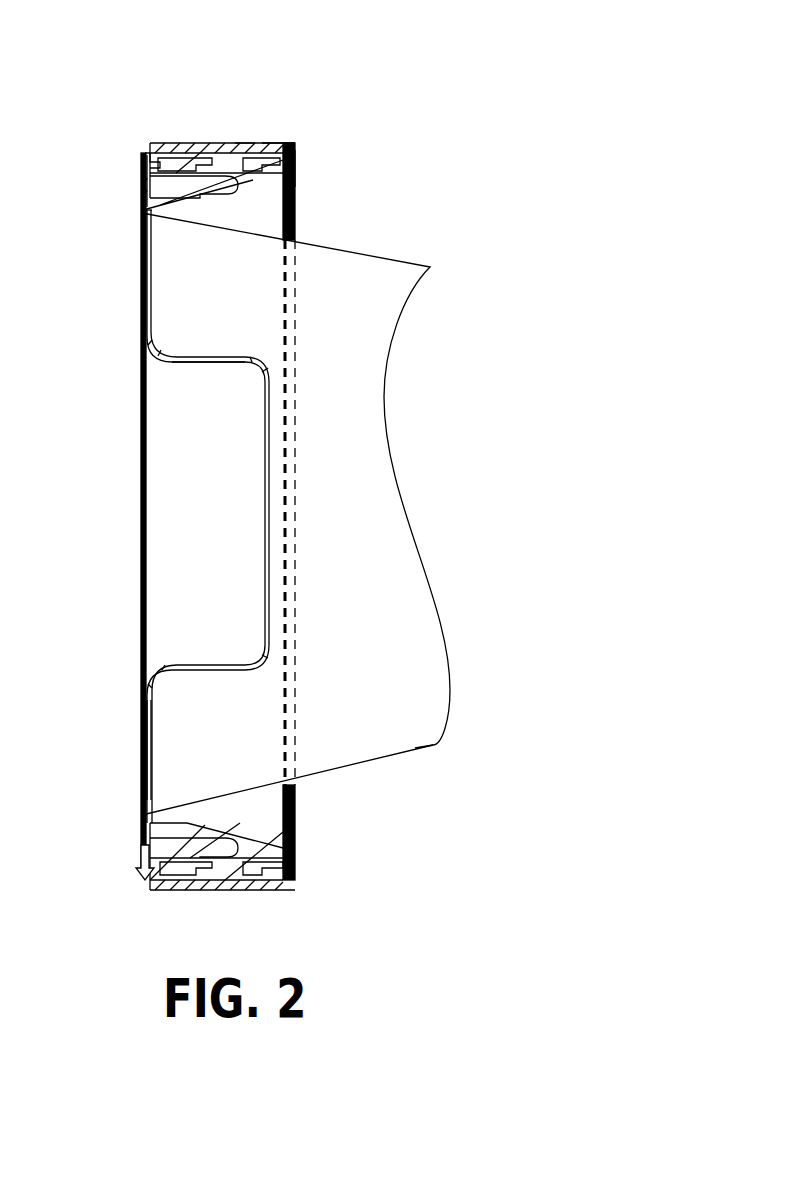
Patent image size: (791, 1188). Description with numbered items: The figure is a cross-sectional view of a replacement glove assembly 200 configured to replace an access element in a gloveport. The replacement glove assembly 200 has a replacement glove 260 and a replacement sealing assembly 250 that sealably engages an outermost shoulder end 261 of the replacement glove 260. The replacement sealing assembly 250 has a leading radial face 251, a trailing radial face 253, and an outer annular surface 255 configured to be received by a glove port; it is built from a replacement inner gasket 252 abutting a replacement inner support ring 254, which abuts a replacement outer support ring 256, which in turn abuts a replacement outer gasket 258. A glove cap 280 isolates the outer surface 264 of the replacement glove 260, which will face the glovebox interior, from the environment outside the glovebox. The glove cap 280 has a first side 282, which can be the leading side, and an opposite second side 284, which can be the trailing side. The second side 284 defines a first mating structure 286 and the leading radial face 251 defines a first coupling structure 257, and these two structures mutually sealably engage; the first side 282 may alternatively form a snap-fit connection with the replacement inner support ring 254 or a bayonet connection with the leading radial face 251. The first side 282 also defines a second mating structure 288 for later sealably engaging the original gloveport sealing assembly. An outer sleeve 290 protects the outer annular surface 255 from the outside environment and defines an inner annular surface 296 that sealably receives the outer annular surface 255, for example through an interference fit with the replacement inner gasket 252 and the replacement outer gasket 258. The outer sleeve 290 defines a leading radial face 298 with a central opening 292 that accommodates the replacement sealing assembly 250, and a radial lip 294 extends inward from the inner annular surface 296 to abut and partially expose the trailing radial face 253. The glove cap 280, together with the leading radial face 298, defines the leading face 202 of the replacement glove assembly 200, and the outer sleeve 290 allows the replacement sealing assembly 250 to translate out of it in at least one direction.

The replacement glove assembly 200 is at (264, 50).
The leading face 202 is at (98, 460).
The replacement sealing assembly 250 is at (220, 218).
The leading radial face 251 is at (120, 155).
The replacement inner gasket 252 is at (150, 143).
The trailing radial face 253 is at (304, 150).
The replacement inner support ring 254 is at (190, 143).
The outer annular surface 255 is at (248, 133).
The replacement outer support ring 256 is at (232, 190).
The first coupling structure 257 is at (160, 143).
The replacement outer gasket 258 is at (282, 143).
The replacement glove 260 is at (388, 258).
The outermost shoulder end 261 is at (232, 893).
The outer surface 264 is at (413, 738).
The glove cap 280 is at (185, 358).
The first side 282 is at (142, 757).
The second side 284 is at (152, 778).
The first mating structure 286 is at (145, 178).
The second mating structure 288 is at (145, 210).
The outer sleeve 290 is at (280, 892).
The opening 292 is at (282, 803).
The radial lip 294 is at (290, 870).
The inner annular surface 296 is at (245, 858).
The leading radial face 298 is at (128, 882).